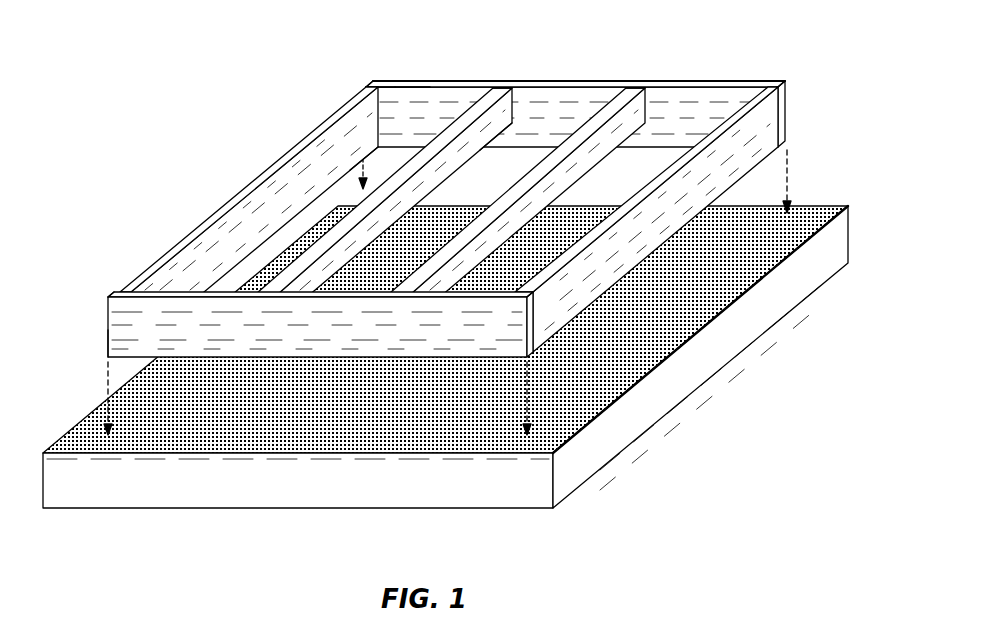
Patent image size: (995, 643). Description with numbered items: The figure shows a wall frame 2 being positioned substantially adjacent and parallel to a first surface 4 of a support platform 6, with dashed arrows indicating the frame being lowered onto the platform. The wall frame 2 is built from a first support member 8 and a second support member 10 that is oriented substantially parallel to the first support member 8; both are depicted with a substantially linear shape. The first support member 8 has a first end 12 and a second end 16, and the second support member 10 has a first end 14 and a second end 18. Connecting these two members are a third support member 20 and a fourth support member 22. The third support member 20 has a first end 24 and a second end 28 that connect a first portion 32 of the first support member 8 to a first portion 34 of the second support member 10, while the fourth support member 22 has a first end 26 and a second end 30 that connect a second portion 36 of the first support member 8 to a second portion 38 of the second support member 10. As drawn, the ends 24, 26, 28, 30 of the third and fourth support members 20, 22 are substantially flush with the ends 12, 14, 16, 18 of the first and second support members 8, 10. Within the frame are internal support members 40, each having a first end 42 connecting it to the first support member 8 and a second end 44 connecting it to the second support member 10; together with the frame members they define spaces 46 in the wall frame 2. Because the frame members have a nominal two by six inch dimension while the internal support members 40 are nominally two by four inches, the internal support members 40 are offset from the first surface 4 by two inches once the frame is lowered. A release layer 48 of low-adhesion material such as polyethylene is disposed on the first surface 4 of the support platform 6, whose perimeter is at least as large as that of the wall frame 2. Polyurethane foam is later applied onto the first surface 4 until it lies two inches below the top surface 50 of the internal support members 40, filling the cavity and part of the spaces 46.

The wall frame 2 is at (449, 184).
The first surface 4 is at (456, 329).
The support platform 6 is at (848, 230).
The first support member 8 is at (334, 300).
The second support member 10 is at (569, 90).
The first end 12 is at (560, 327).
The first end 14 is at (790, 107).
The second end 16 is at (108, 348).
The second end 18 is at (376, 83).
The third support member 20 is at (700, 150).
The fourth support member 22 is at (237, 192).
The first end 24 is at (533, 292).
The first end 26 is at (125, 291).
The second end 28 is at (766, 83).
The second end 30 is at (366, 90).
The first portion 32 is at (477, 298).
The first portion 34 is at (735, 83).
The second portion 36 is at (167, 298).
The second portion 38 is at (407, 83).
The internal support member 40 is at (401, 193).
The first end 42 is at (395, 290).
The second end 44 is at (508, 83).
The space 46 is at (430, 100).
The release layer 48 is at (336, 422).
The top surface 50 is at (392, 162).